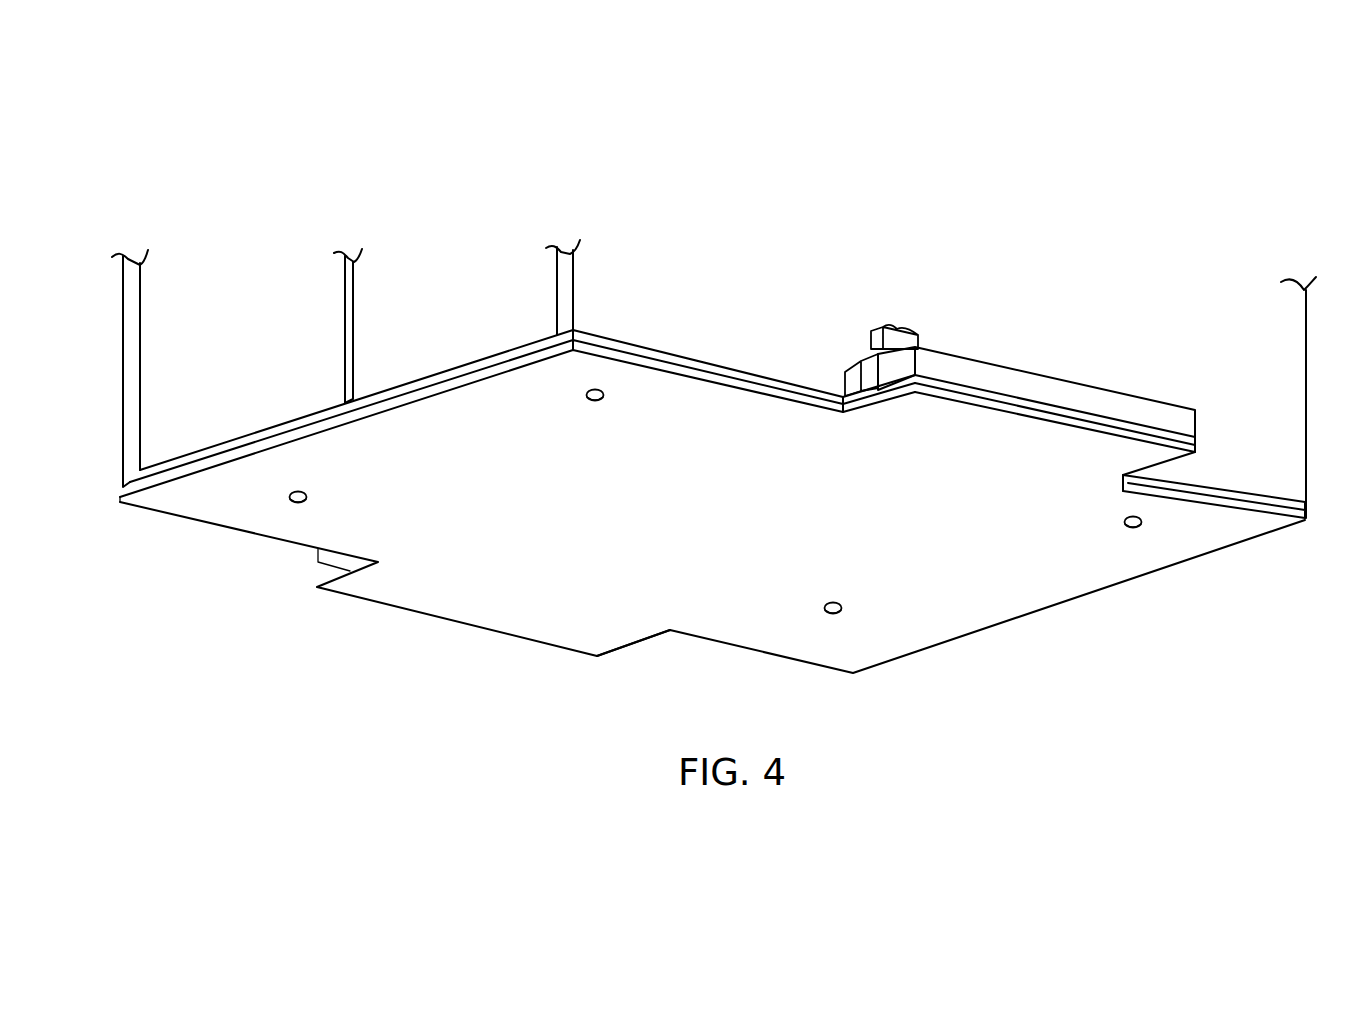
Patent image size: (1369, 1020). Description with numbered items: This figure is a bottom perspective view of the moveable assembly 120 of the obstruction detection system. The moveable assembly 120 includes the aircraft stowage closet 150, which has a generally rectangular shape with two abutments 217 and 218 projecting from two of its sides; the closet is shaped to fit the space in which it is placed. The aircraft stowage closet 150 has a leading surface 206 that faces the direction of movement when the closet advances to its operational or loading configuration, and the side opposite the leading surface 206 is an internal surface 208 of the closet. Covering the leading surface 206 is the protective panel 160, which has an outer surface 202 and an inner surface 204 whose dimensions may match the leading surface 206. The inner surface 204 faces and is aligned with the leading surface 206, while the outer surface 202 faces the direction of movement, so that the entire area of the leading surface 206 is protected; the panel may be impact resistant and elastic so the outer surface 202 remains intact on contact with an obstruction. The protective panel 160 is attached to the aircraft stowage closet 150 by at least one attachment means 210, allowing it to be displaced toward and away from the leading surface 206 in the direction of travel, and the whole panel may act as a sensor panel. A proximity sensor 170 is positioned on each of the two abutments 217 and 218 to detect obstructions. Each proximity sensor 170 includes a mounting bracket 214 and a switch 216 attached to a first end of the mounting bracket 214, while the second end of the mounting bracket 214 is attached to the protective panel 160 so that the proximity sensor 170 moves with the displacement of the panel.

The moveable assembly 120 is at (428, 136).
The aircraft stowage closet 150 is at (570, 298).
The protective panel 160 is at (1145, 552).
The proximity sensor 170 is at (857, 318).
The outer surface 202 is at (1036, 384).
The inner surface 204 is at (1154, 426).
The leading surface 206 is at (1270, 504).
The internal surface 208 is at (729, 360).
The attachment means 210 is at (604, 395).
The mounting bracket 214 is at (843, 388).
The switch 216 is at (900, 338).
The abutment 217 is at (1195, 463).
The abutment 218 is at (565, 631).